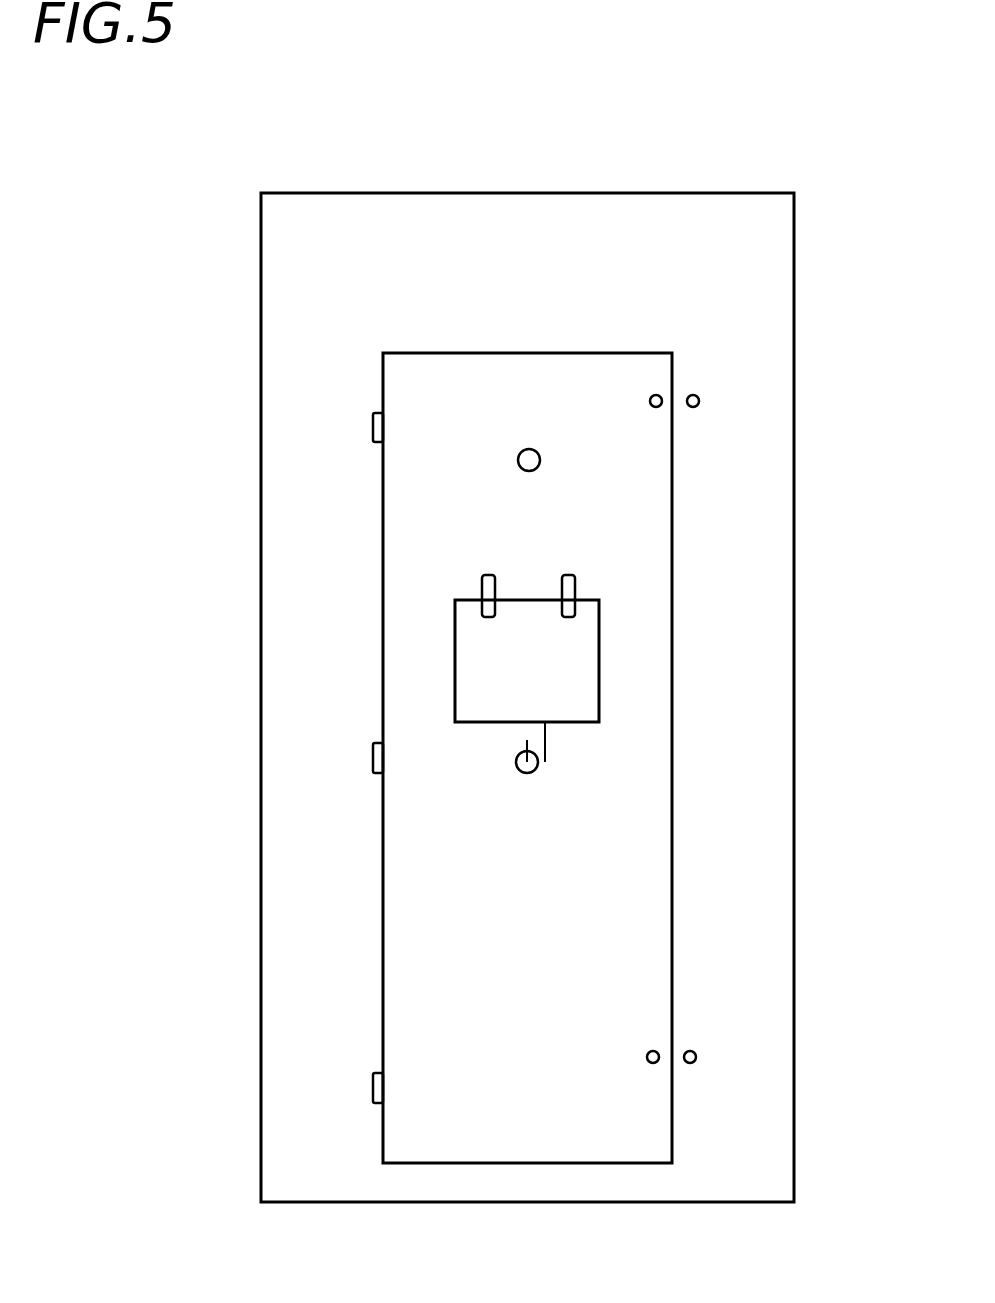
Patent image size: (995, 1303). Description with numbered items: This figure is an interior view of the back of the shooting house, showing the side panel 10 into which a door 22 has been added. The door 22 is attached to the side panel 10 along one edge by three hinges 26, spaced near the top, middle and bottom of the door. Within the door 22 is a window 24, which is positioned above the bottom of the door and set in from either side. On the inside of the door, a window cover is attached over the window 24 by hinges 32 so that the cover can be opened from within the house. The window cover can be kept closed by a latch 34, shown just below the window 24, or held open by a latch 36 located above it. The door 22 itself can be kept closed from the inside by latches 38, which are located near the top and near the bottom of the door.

The side panel 10 is at (298, 311).
The door 22 is at (383, 388).
The window 24 is at (455, 652).
The hinges 26 is at (372, 428).
The hinges 32 is at (575, 575).
The latch 34 is at (538, 762).
The latch 36 is at (540, 458).
The latches 38 is at (698, 397).